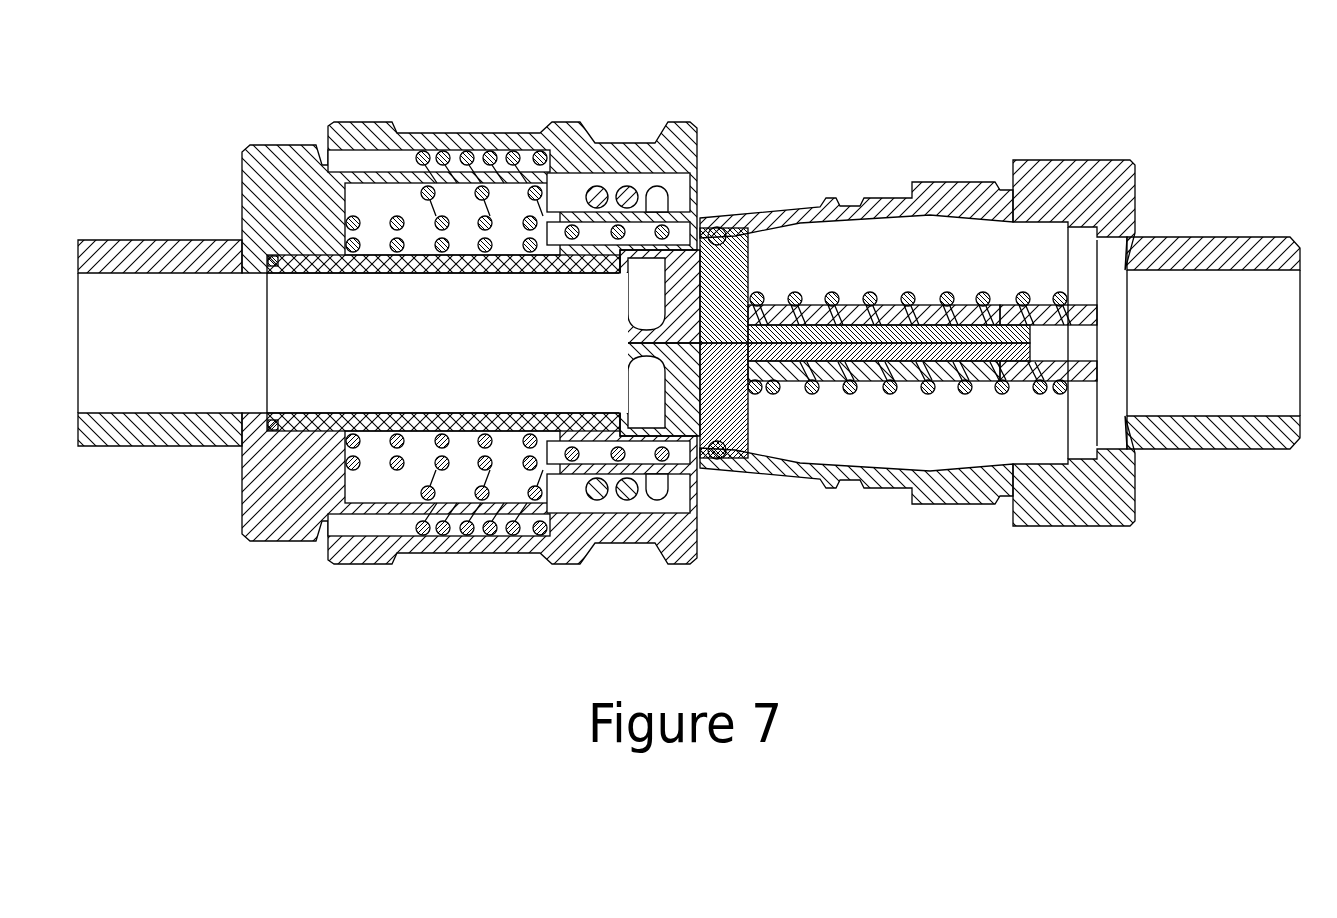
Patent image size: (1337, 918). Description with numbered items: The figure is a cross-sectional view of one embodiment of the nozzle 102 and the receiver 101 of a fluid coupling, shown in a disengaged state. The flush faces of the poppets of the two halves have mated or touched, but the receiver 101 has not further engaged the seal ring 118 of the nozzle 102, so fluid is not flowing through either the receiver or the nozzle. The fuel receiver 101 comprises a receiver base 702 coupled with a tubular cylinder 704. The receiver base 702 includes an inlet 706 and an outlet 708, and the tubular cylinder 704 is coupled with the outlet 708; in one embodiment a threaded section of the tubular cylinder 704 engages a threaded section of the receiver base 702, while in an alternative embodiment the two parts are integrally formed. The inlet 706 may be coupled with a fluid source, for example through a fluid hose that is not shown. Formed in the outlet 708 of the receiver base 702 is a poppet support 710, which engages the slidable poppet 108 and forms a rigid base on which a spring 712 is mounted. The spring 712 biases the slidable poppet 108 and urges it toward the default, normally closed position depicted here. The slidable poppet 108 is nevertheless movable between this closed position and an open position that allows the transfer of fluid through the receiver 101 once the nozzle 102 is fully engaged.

The nozzle 102 is at (72, 118).
The receiver 101 is at (701, 115).
The seal ring 118 is at (700, 213).
The tubular cylinder 704 is at (838, 205).
The receiver base 702 is at (1153, 240).
The inlet 706 is at (1252, 360).
The outlet 708 is at (1023, 283).
The poppet support 710 is at (1005, 320).
The spring 712 is at (887, 378).
The slidable poppet 108 is at (770, 330).